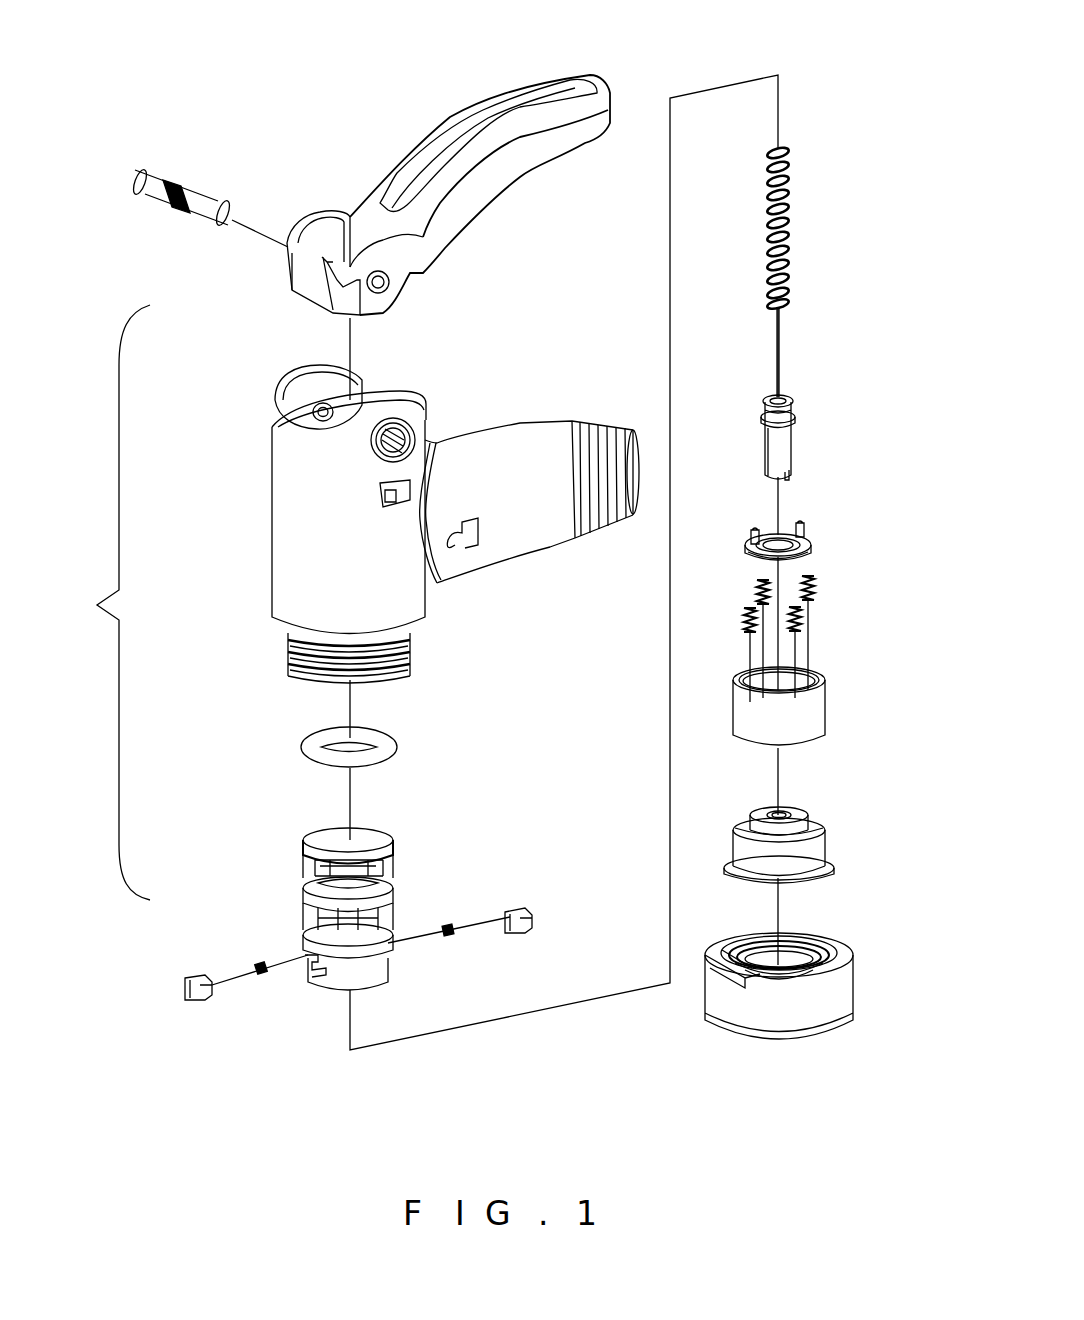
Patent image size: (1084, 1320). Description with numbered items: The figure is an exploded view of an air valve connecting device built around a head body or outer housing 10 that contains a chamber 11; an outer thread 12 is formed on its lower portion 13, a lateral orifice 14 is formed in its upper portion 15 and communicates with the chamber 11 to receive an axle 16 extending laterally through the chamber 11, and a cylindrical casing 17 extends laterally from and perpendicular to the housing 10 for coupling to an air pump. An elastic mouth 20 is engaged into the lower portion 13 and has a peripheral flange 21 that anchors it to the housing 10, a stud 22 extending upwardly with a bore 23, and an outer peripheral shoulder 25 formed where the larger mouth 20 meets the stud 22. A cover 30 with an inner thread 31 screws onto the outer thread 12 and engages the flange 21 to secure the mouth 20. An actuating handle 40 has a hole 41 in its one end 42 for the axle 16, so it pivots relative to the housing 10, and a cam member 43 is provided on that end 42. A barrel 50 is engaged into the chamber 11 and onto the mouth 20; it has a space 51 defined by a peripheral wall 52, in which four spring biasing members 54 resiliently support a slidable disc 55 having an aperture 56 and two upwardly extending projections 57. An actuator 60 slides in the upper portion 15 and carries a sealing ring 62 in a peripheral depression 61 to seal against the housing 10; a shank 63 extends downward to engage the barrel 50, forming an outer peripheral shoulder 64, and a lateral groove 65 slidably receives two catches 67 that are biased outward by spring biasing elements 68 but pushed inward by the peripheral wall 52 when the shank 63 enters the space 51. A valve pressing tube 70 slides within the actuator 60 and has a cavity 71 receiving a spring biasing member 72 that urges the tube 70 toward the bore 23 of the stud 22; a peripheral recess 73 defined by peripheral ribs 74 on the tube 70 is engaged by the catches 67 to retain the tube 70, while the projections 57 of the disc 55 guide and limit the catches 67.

The housing 10 is at (293, 507).
The chamber 11 is at (300, 400).
The outer thread 12 is at (290, 647).
The lower portion 13 is at (307, 677).
The lateral orifice 14 is at (423, 440).
The upper portion 15 is at (275, 428).
The axle 16 is at (147, 187).
The cylindrical casing 17 is at (533, 530).
The mouth 20 is at (800, 850).
The peripheral flange 21 is at (815, 882).
The stud 22 is at (798, 810).
The bore 23 is at (767, 812).
The outer peripheral shoulder 25 is at (740, 827).
The cover 30 is at (763, 1027).
The inner thread 31 is at (833, 940).
The actuating handle 40 is at (497, 95).
The hole 41 is at (392, 284).
The one end 42 is at (350, 210).
The cam member 43 is at (310, 300).
The barrel 50 is at (797, 727).
The space 51 is at (807, 683).
The peripheral wall 52 is at (747, 683).
The spring biasing members 54 is at (800, 623).
The disc 55 is at (808, 550).
The aperture 56 is at (755, 558).
The projections 57 is at (800, 528).
The actuator 60 is at (372, 840).
The peripheral depression 61 is at (307, 883).
The sealing ring 62 is at (372, 740).
The shank 63 is at (368, 980).
The outer peripheral shoulder 64 is at (388, 957).
The groove 65 is at (308, 973).
The catches 67 is at (193, 980).
The spring biasing elements 68 is at (260, 963).
The valve pressing tube 70 is at (772, 440).
The cavity 71 is at (785, 397).
The spring biasing member 72 is at (787, 205).
The peripheral recess 73 is at (792, 413).
The peripheral ribs 74 is at (792, 397).